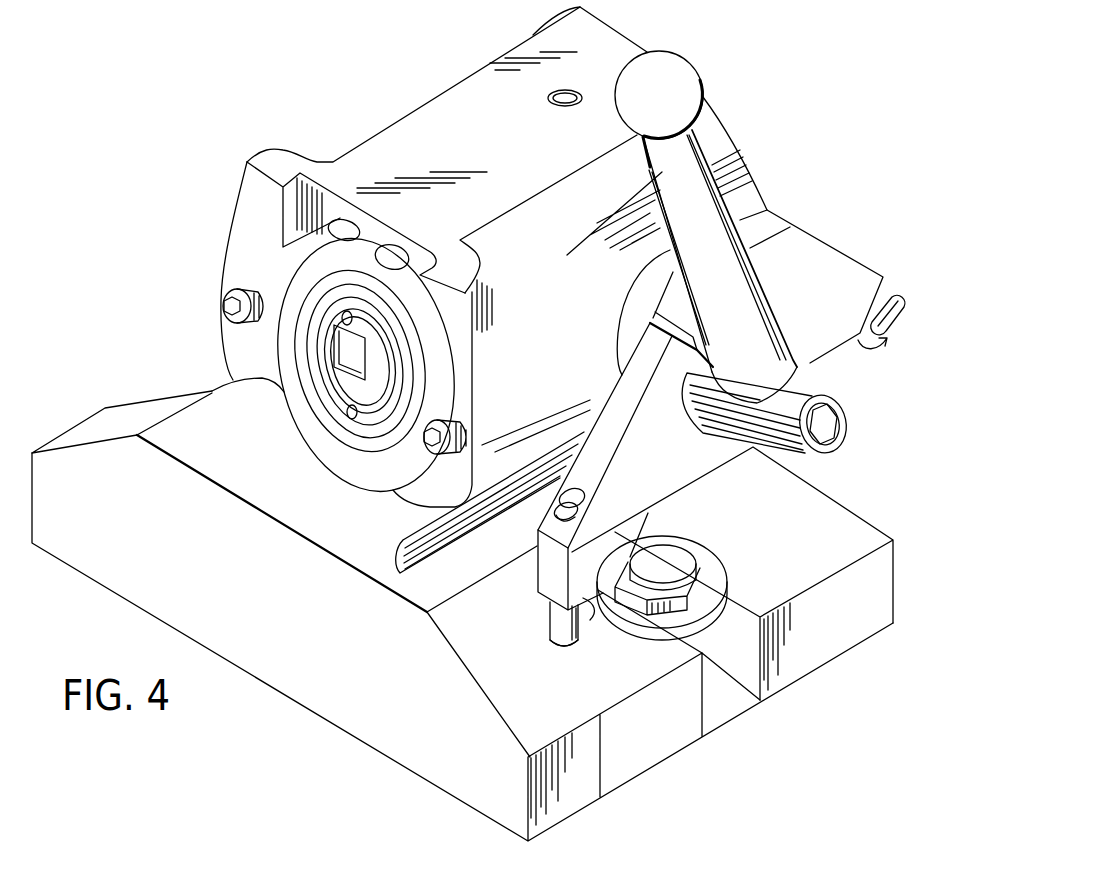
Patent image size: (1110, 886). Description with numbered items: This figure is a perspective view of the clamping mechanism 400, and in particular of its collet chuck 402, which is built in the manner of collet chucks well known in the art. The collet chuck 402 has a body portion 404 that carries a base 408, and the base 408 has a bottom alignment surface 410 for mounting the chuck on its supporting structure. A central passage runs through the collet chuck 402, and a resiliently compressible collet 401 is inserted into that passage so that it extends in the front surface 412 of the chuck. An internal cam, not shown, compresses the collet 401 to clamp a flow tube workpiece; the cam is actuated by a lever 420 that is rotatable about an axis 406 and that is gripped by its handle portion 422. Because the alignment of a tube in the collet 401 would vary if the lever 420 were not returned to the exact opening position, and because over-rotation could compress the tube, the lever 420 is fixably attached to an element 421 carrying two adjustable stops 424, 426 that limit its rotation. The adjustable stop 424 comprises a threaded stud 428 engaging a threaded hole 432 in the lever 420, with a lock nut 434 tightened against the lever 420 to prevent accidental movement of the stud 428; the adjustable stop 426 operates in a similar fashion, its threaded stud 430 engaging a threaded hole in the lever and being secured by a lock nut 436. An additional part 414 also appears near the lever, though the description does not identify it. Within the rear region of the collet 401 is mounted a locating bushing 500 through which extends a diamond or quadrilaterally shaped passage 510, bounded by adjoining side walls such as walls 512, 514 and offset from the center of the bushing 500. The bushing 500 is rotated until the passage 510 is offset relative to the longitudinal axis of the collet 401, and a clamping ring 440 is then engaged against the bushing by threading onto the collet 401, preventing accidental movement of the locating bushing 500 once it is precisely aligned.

The clamping mechanism 400 is at (339, 128).
The collet 401 is at (370, 293).
The collet chuck 402 is at (465, 82).
The body portion 404 is at (590, 50).
The axis 406 is at (640, 310).
The base 408 is at (383, 720).
The bottom alignment surface 410 is at (618, 788).
The front surface 412 is at (740, 120).
The nut and washer 414 is at (697, 573).
The lever 420 is at (730, 292).
The element 421 is at (612, 428).
The handle portion 422 is at (670, 173).
The adjustable stop 424 is at (545, 637).
The adjustable stop 426 is at (887, 333).
The threaded stud 428 is at (580, 665).
The threaded stud 430 is at (897, 318).
The threaded hole 432 is at (593, 500).
The lock nut 434 is at (587, 613).
The lock nut 436 is at (883, 277).
The clamping ring 440 is at (370, 417).
The locating bushing 500 is at (350, 382).
The passage 510 is at (425, 362).
The side wall 512 is at (333, 348).
The side wall 514 is at (320, 300).